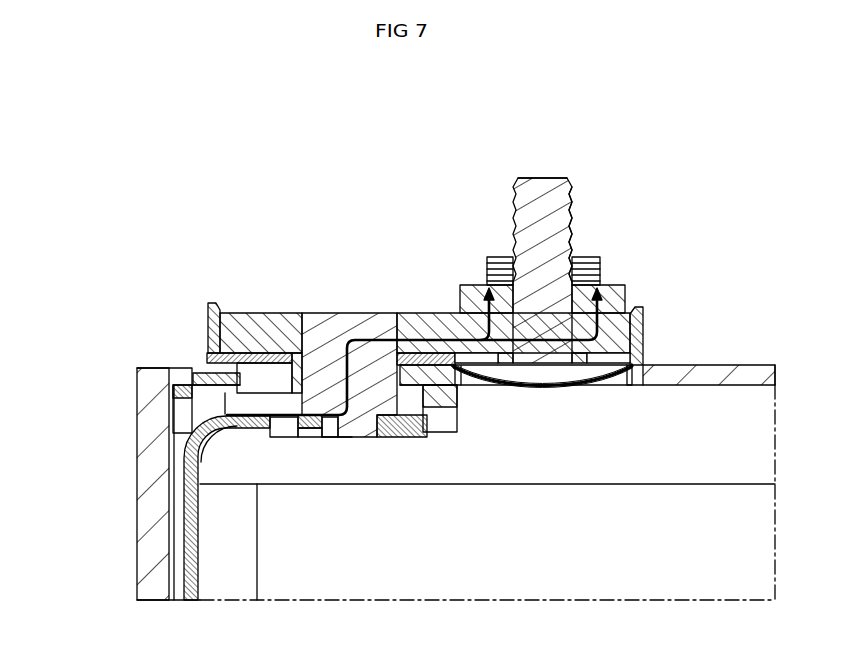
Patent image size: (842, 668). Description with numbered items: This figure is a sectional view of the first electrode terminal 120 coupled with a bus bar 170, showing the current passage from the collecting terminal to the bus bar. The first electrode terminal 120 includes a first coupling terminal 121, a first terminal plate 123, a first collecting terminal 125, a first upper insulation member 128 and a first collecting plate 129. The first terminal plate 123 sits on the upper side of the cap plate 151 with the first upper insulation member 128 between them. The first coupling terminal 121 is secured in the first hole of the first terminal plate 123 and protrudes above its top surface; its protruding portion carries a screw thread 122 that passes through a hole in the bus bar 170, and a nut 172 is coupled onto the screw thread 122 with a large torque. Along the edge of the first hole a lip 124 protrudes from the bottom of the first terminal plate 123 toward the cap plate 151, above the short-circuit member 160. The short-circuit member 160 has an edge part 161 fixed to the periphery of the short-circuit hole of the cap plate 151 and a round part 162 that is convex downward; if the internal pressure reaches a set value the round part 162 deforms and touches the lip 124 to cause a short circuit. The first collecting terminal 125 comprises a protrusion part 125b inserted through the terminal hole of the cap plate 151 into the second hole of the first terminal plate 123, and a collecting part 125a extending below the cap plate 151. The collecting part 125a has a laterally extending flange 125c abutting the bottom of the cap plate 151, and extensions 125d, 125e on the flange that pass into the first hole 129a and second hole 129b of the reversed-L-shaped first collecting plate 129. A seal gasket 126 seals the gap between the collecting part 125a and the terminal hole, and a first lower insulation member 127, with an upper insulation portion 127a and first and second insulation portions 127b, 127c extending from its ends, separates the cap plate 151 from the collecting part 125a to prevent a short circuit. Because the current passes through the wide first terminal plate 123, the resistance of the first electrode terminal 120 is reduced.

The first electrode terminal 120 is at (552, 162).
The first coupling terminal 121 is at (530, 177).
The screw thread 122 is at (573, 222).
The first terminal plate 123 is at (437, 313).
The lip 124 is at (583, 362).
The first collecting terminal 125 is at (326, 416).
The collecting part 125a is at (376, 313).
The protrusion part 125b is at (260, 313).
The flange 125c is at (403, 405).
The extension 125d is at (300, 437).
The extension 125e is at (352, 432).
The seal gasket 126 is at (212, 363).
The first lower insulation member 127 is at (167, 410).
The upper insulation portion 127a is at (207, 363).
The first insulation portion 127b is at (185, 463).
The second insulation portion 127c is at (183, 428).
The first upper insulation member 128 is at (207, 322).
The first collecting plate 129 is at (183, 537).
The first hole 129a is at (336, 437).
The second hole 129b is at (284, 437).
The cap plate 151 is at (700, 364).
The short-circuit member 160 is at (599, 393).
The edge part 161 is at (630, 366).
The round part 162 is at (577, 366).
The bus bar 170 is at (485, 290).
The nut 172 is at (590, 268).